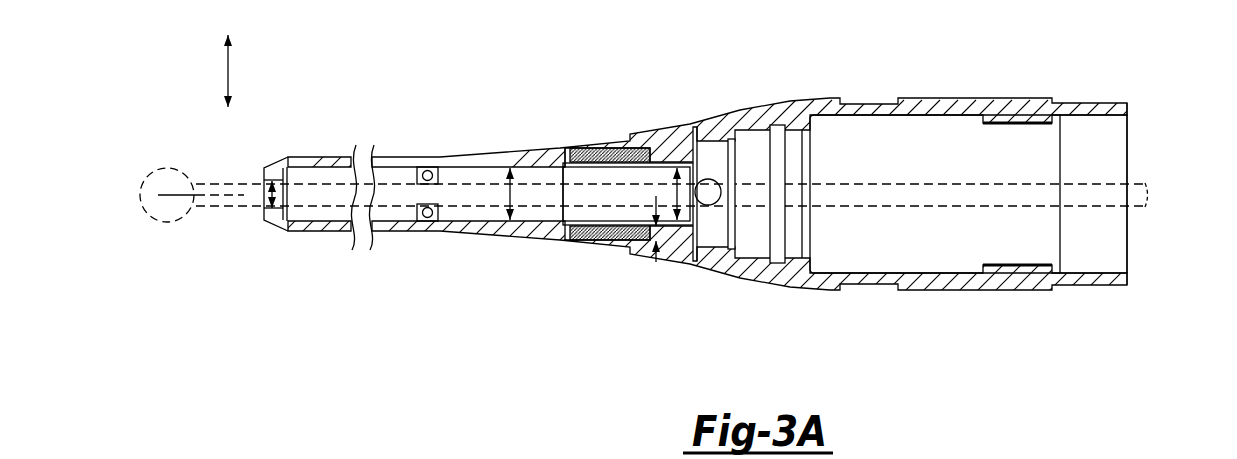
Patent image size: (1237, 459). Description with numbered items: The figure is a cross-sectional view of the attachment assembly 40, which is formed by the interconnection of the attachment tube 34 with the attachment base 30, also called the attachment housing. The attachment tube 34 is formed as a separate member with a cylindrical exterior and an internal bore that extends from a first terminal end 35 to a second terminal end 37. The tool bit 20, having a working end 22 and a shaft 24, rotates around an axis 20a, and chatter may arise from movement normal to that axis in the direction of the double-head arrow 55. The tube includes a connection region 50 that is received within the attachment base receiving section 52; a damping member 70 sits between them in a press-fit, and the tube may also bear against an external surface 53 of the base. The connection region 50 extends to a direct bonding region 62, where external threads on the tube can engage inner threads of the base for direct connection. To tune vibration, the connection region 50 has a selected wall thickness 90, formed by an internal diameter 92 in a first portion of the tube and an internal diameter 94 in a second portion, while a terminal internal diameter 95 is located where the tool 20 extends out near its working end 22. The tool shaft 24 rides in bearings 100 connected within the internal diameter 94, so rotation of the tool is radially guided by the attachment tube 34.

The tool bit 20 is at (207, 218).
The axis 20a is at (245, 190).
The working end 22 is at (201, 182).
The shaft 24 is at (888, 183).
The attachment base 30 is at (657, 122).
The attachment tube 34 is at (423, 150).
The first terminal end 35 is at (697, 226).
The second terminal end 37 is at (266, 225).
The attachment assembly 40 is at (541, 60).
The connection region 50 is at (598, 148).
The attachment base receiving section 52 is at (632, 148).
The external surface 53 is at (572, 148).
The double-head arrow 55 is at (228, 72).
The direct bonding region 62 is at (677, 162).
The damping member 70 is at (584, 242).
The wall thickness 90 is at (641, 244).
The internal diameter 92 is at (720, 200).
The internal diameter 94 is at (508, 194).
The terminal internal diameter 95 is at (278, 196).
The bearings 100 is at (418, 166).